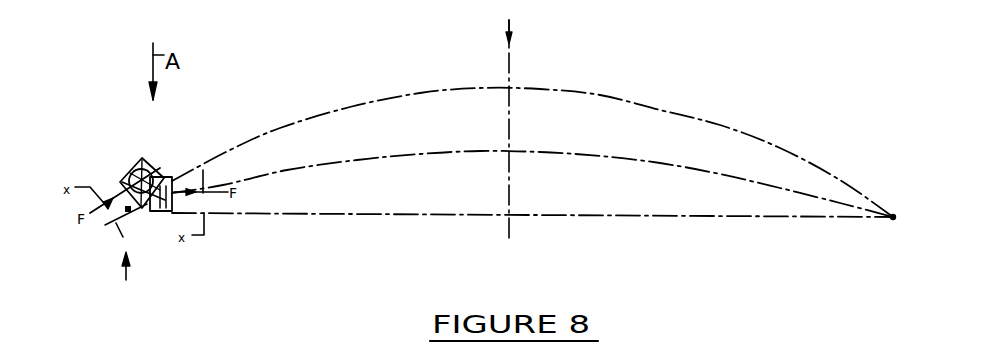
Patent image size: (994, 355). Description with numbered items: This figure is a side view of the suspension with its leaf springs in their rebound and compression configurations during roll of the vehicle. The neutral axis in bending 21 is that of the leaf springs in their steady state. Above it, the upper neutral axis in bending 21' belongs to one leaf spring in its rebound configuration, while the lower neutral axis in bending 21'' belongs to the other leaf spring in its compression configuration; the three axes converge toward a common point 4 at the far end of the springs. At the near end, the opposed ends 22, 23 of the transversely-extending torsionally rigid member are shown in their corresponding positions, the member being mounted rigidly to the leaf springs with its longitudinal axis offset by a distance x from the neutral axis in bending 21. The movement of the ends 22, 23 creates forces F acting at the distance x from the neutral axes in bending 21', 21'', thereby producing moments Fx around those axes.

The pivot point / far end of arm 4 is at (893, 235).
The neutral axis in bending 21 is at (532, 159).
The upper neutral axis in bending 21' is at (532, 124).
The lower neutral axis in bending 21'' is at (532, 256).
The end of torsionally rigid member 22 is at (124, 182).
The end of torsionally rigid member 23 is at (158, 201).